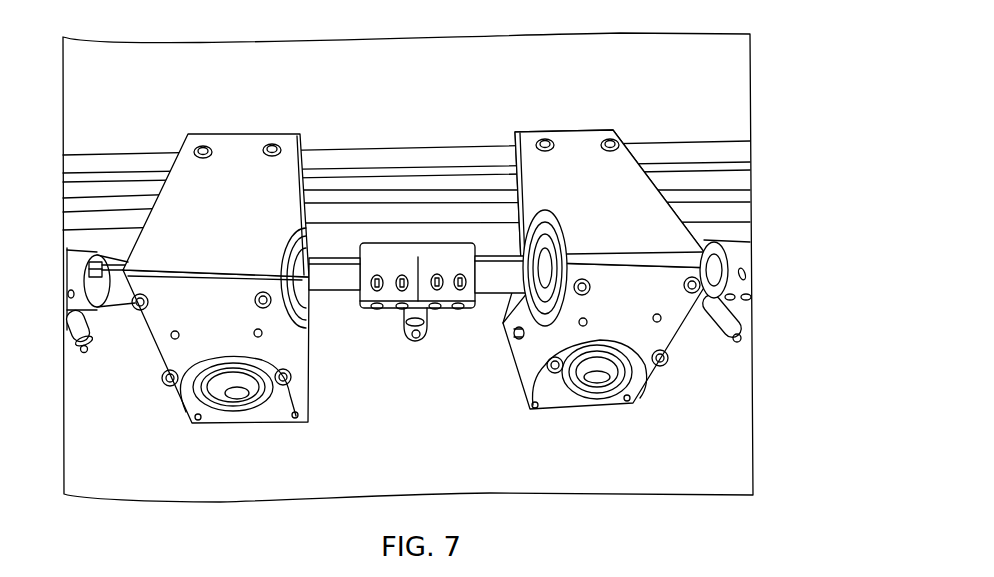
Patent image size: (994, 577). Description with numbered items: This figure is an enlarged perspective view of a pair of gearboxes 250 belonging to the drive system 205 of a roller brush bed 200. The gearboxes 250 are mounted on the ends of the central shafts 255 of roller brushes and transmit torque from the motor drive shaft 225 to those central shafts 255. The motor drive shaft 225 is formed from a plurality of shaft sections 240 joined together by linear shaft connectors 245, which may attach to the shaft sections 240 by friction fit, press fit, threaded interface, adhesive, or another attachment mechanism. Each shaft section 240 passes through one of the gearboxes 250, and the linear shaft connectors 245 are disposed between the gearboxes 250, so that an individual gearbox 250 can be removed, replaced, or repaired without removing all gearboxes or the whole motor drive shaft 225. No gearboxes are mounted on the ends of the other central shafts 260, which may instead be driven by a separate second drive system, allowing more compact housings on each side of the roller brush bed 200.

The roller brush bed 200 is at (71, 28).
The drive system 205 is at (629, 78).
The motor drive shaft 225 is at (726, 279).
The shaft sections 240 is at (333, 270).
The linear shaft connectors 245 is at (77, 258).
The gearboxes 250 is at (305, 413).
The central shafts 255 is at (236, 393).
The central shafts 260 is at (83, 347).